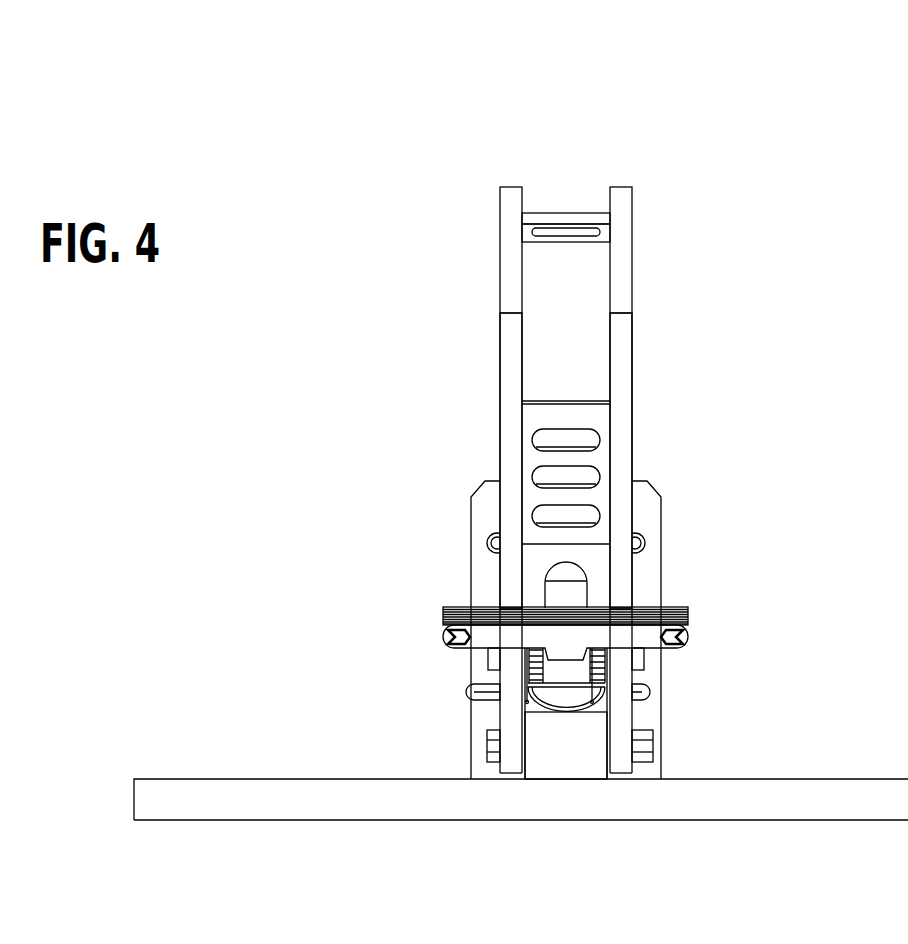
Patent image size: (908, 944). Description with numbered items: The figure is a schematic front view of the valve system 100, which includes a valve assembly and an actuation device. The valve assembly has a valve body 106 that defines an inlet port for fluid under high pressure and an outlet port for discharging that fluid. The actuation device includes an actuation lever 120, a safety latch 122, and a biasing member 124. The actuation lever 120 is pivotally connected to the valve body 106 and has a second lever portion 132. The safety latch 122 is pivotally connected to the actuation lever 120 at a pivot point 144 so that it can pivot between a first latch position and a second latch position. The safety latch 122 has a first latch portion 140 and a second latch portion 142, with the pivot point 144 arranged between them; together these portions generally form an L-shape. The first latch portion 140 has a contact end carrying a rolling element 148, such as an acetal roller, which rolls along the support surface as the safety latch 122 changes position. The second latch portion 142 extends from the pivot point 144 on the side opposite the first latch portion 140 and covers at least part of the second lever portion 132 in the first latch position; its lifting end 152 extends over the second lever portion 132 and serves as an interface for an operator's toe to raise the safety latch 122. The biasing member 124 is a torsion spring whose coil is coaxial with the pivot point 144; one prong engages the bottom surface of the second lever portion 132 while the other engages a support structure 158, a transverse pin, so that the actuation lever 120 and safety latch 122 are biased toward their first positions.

The valve system 100 is at (456, 124).
The valve body 106 is at (652, 713).
The actuation lever 120 is at (727, 594).
The safety latch 122 is at (652, 215).
The biasing member 124 is at (594, 660).
The second lever portion 132 is at (648, 635).
The first latch portion 140 is at (509, 717).
The second latch portion 142 is at (514, 346).
The pivot point 144 is at (480, 653).
The rolling element 148 is at (549, 773).
The lifting end 152 is at (514, 218).
The support structure 158 is at (597, 690).